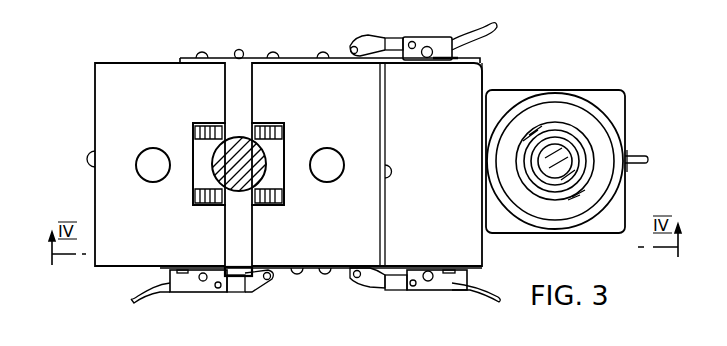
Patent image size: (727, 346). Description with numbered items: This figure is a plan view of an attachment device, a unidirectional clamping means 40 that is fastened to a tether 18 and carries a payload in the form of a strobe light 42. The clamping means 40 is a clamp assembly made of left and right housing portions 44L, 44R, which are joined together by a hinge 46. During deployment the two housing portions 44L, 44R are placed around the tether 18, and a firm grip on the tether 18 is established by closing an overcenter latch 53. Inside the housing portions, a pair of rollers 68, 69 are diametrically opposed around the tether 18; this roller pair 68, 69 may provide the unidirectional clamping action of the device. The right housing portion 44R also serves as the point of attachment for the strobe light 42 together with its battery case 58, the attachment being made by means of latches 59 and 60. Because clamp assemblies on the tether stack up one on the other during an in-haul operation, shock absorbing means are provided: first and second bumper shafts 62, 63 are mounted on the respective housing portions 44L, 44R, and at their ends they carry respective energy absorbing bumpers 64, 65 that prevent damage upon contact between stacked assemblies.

The tether 18 is at (238, 140).
The unidirectional clamping means 40 is at (81, 126).
The strobe light 42 is at (582, 117).
The left housing portion 44L is at (120, 257).
The right housing portion 44R is at (327, 248).
The hinge 46 is at (238, 50).
The overcenter latch 53 is at (195, 291).
The battery case 58 is at (463, 79).
The latch 59 is at (447, 288).
The latch 60 is at (427, 37).
The first bumper shaft 62 is at (152, 148).
The second bumper shaft 63 is at (324, 148).
The energy absorbing bumper 64 is at (155, 172).
The energy absorbing bumper 65 is at (330, 172).
The roller 68 is at (199, 120).
The roller 69 is at (265, 120).